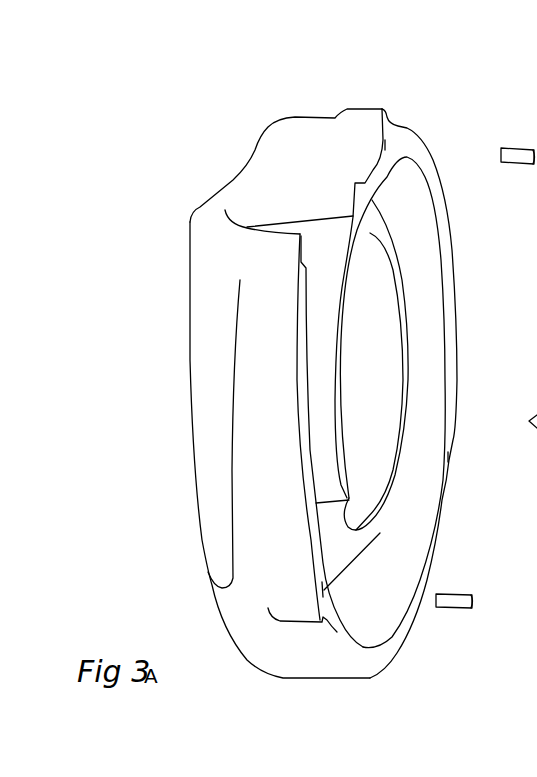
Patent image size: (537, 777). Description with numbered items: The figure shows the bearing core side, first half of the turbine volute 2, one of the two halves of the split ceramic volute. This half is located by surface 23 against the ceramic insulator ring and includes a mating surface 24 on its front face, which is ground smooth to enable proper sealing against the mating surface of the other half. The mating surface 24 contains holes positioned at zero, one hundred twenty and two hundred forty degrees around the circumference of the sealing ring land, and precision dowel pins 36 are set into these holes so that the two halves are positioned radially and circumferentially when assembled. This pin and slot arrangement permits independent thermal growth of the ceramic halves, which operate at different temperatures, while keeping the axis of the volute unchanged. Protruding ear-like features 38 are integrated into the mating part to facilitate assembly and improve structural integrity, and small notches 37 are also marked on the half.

The first half of the turbine volute 2 is at (295, 157).
The surface 23 is at (213, 530).
The mating surface 24 is at (408, 150).
The dowel pins 36 is at (530, 164).
The recesses 37 is at (388, 150).
The protruding ear-like features 38 is at (367, 115).